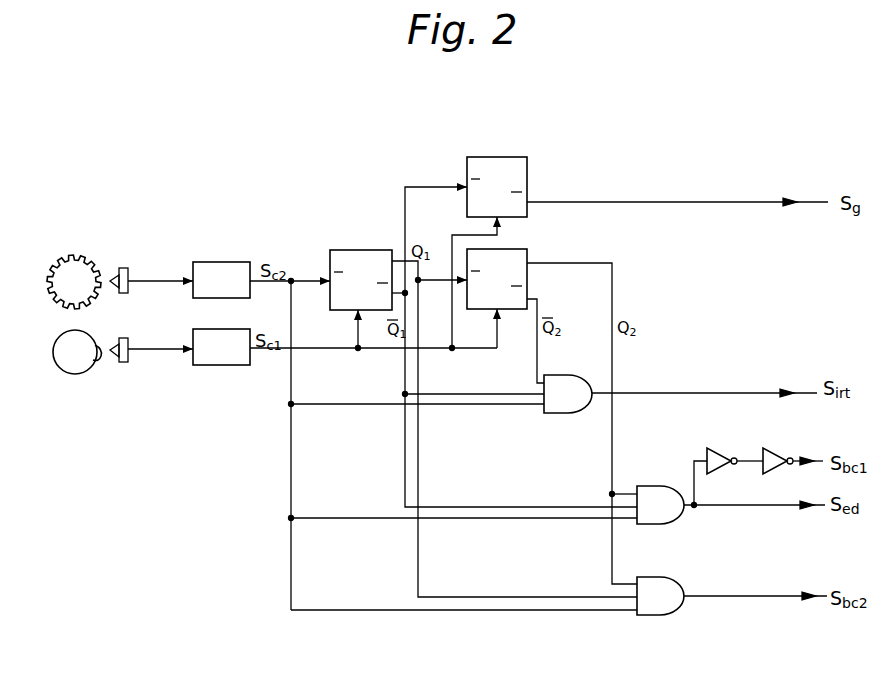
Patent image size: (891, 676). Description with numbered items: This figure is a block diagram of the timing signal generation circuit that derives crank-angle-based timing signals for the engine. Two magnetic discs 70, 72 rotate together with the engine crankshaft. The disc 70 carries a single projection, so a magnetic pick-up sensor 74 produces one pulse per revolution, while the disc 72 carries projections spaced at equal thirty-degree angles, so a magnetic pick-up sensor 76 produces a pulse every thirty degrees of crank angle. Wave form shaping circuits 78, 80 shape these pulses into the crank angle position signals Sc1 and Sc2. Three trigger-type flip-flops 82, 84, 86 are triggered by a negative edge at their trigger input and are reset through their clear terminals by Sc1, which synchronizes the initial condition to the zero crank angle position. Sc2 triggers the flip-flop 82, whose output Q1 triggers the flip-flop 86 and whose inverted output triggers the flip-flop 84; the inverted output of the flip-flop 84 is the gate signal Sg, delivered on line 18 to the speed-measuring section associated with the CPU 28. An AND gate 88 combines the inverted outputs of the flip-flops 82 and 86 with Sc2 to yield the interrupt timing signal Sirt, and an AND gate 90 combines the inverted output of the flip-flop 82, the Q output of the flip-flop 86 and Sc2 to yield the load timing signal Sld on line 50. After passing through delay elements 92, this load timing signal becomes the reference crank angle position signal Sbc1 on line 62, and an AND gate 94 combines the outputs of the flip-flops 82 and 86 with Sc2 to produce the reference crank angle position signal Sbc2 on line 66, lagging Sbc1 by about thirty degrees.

The line 18 is at (745, 200).
The CPU 28 is at (750, 391).
The line 50 is at (748, 507).
The line 62 is at (823, 458).
The line 66 is at (781, 594).
The magnetic disc 70 is at (75, 374).
The magnetic disc 72 is at (83, 258).
The magnetic pick-up sensor 74 is at (123, 362).
The magnetic pick-up sensor 76 is at (125, 267).
The wave form shaping circuit 78 is at (222, 366).
The wave form shaping circuit 80 is at (225, 262).
The trigger-type flip-flop 82 is at (350, 249).
The trigger-type flip-flop 84 is at (515, 157).
The trigger-type flip-flop 86 is at (518, 249).
The AND gate 88 is at (563, 413).
The AND gate 90 is at (663, 486).
The delay elements 92 is at (766, 448).
The AND gate 94 is at (672, 577).